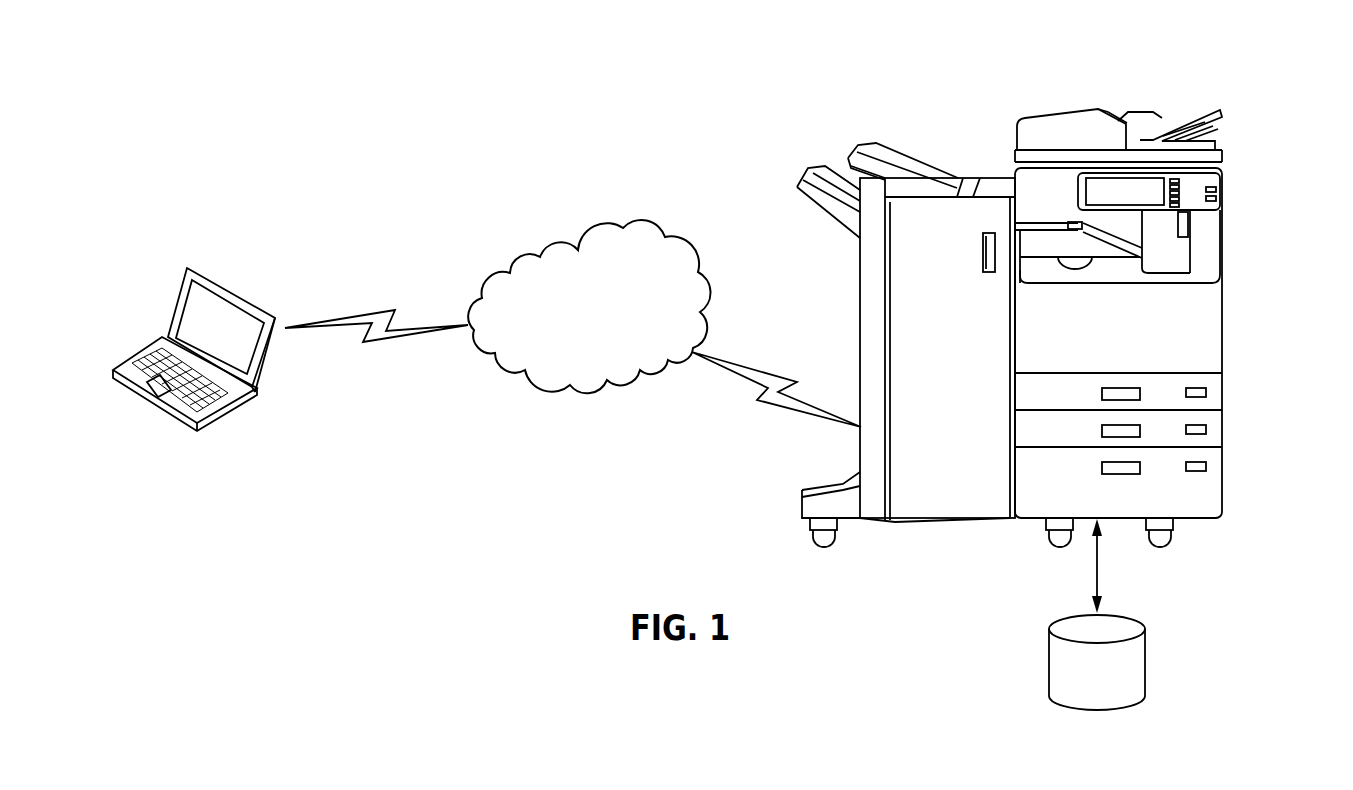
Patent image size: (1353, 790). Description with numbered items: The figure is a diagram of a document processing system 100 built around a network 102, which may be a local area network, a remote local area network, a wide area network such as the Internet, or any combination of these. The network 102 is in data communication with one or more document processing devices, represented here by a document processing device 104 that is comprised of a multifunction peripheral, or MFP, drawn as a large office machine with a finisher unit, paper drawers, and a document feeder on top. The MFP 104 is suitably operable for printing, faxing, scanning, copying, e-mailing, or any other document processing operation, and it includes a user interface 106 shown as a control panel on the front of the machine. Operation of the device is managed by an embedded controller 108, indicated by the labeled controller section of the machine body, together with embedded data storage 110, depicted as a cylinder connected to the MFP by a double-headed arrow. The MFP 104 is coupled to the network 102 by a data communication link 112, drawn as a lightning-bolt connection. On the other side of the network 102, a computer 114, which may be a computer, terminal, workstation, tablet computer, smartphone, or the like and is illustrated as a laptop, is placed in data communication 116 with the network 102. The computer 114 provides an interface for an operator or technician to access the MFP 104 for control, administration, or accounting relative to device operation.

The document processing system 100 is at (292, 123).
The network 102 is at (603, 228).
The document processing device 104 is at (1043, 112).
The user interface 106 is at (1223, 186).
The embedded controller 108 is at (1210, 308).
The embedded data storage 110 is at (1148, 647).
The data communication 112 is at (777, 402).
The computer 114 is at (181, 296).
The data communication 116 is at (392, 340).